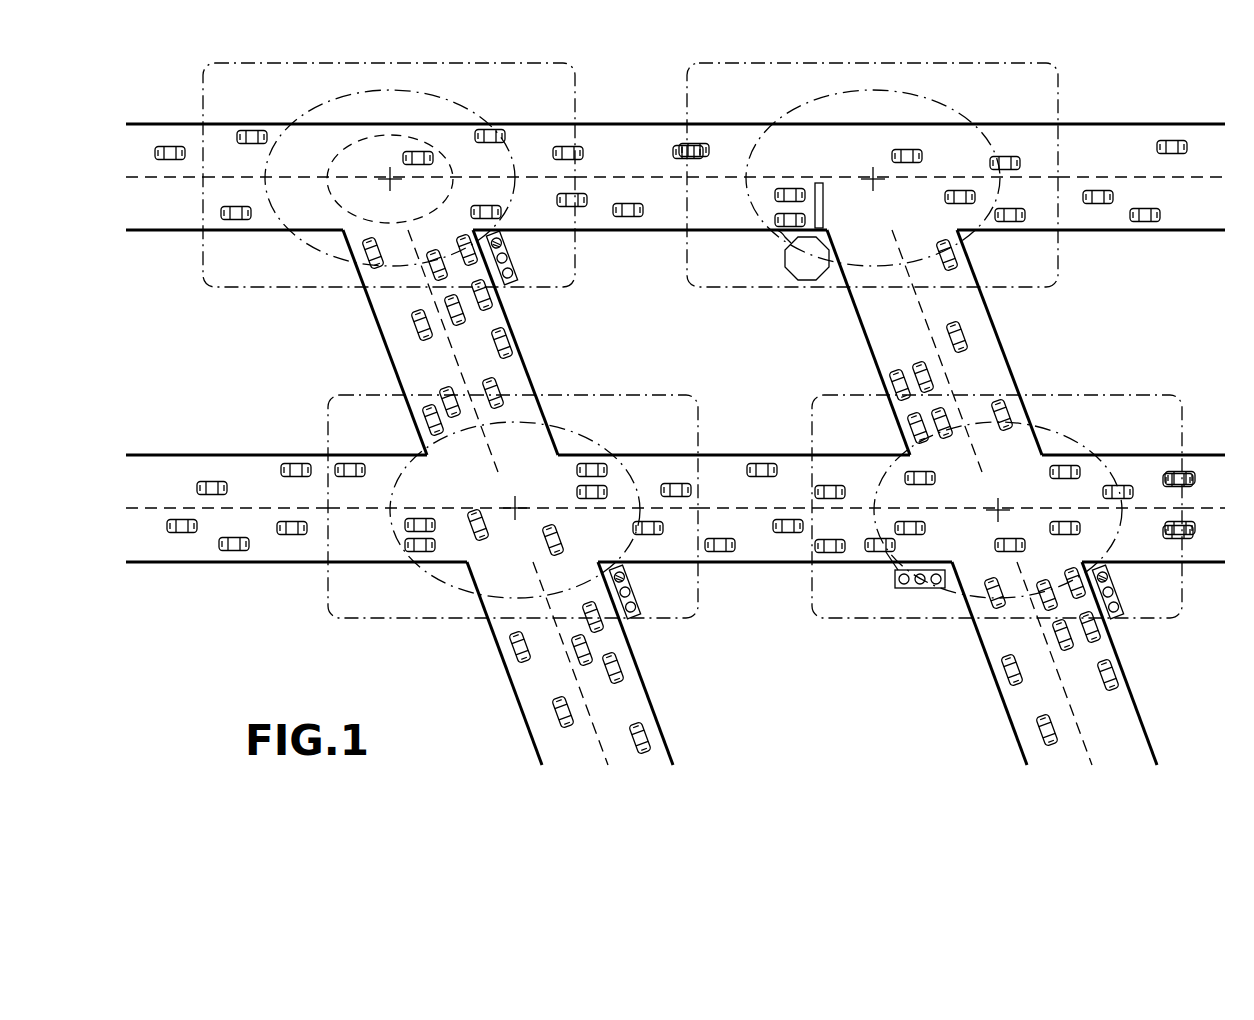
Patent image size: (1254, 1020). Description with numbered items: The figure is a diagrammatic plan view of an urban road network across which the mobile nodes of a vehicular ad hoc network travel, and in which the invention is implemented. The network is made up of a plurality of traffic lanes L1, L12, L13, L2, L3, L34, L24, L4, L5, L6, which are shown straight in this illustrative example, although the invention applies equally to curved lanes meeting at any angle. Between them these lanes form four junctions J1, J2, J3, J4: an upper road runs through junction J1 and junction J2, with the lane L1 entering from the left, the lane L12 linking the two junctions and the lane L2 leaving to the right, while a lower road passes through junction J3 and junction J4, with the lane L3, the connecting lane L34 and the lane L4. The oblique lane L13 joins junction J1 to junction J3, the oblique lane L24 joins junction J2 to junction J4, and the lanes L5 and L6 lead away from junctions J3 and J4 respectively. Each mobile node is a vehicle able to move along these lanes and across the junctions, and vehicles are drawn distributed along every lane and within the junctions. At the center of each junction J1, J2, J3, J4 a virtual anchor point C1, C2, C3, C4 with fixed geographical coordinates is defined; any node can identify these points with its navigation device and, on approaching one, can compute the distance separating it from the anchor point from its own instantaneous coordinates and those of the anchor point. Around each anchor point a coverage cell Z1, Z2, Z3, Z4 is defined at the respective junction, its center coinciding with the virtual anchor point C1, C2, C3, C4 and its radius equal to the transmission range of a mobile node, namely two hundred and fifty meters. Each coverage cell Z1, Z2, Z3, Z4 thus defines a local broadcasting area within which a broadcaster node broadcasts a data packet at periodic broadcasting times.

The traffic lane L1 is at (164, 166).
The traffic lane L2 is at (1141, 166).
The traffic lane L3 is at (227, 497).
The traffic lane L4 is at (1194, 496).
The traffic lane L5 is at (573, 663).
The traffic lane L6 is at (1057, 663).
The traffic lane L12 is at (639, 166).
The traffic lane L13 is at (450, 351).
The traffic lane L24 is at (934, 351).
The traffic lane L34 is at (755, 496).
The junction J1 is at (409, 175).
The junction J2 is at (889, 175).
The junction J3 is at (534, 507).
The junction J4 is at (1018, 507).
The coverage cell Z1 is at (460, 104).
The coverage cell Z2 is at (948, 106).
The coverage cell Z3 is at (588, 436).
The coverage cell Z4 is at (1072, 438).
The virtual anchor point C1 is at (390, 178).
The virtual anchor point C2 is at (873, 178).
The virtual anchor point C3 is at (515, 507).
The virtual anchor point C4 is at (998, 509).